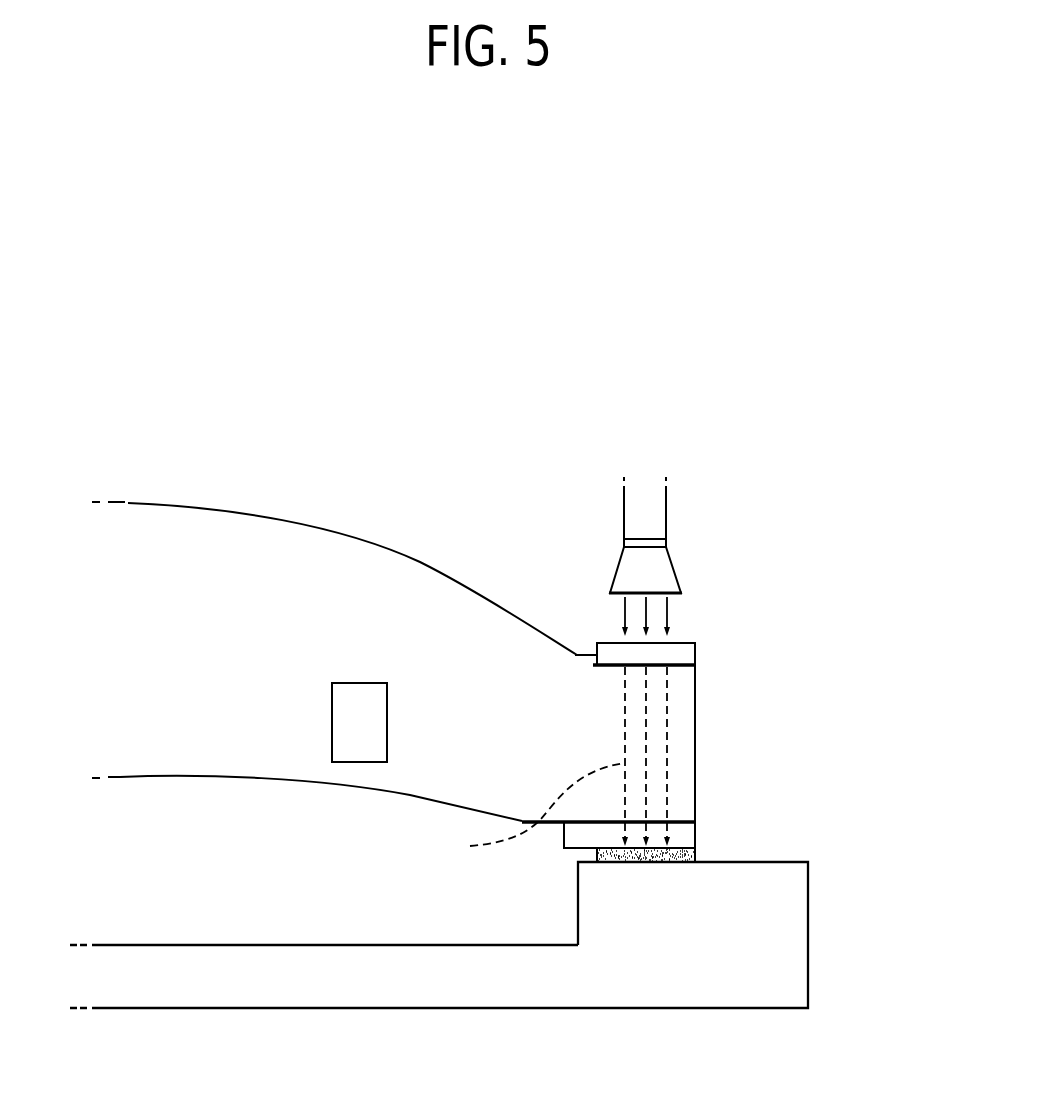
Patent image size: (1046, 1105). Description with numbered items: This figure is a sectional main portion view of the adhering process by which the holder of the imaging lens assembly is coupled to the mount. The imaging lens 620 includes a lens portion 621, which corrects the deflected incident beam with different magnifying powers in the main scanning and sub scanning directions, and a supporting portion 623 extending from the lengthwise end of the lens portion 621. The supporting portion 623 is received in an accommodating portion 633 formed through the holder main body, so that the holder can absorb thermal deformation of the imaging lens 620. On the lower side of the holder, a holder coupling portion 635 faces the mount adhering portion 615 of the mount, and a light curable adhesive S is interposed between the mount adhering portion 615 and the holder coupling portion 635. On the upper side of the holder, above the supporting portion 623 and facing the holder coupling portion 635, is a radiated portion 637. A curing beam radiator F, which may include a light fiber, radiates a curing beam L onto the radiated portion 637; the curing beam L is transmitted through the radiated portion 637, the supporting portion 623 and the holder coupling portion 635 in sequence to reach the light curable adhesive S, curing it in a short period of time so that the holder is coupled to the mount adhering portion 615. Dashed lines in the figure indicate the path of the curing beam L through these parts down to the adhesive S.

The mount adhering portion 615 is at (800, 862).
The imaging lens 620 is at (344, 492).
The lens portion 621 is at (231, 536).
The supporting portion 623 is at (683, 777).
The accommodating portion 633 is at (675, 668).
The holder coupling portion 635 is at (683, 853).
The radiated portion 637 is at (683, 636).
The curing beam radiator F is at (657, 570).
The curing beam L is at (667, 603).
The light curable adhesive S is at (600, 856).